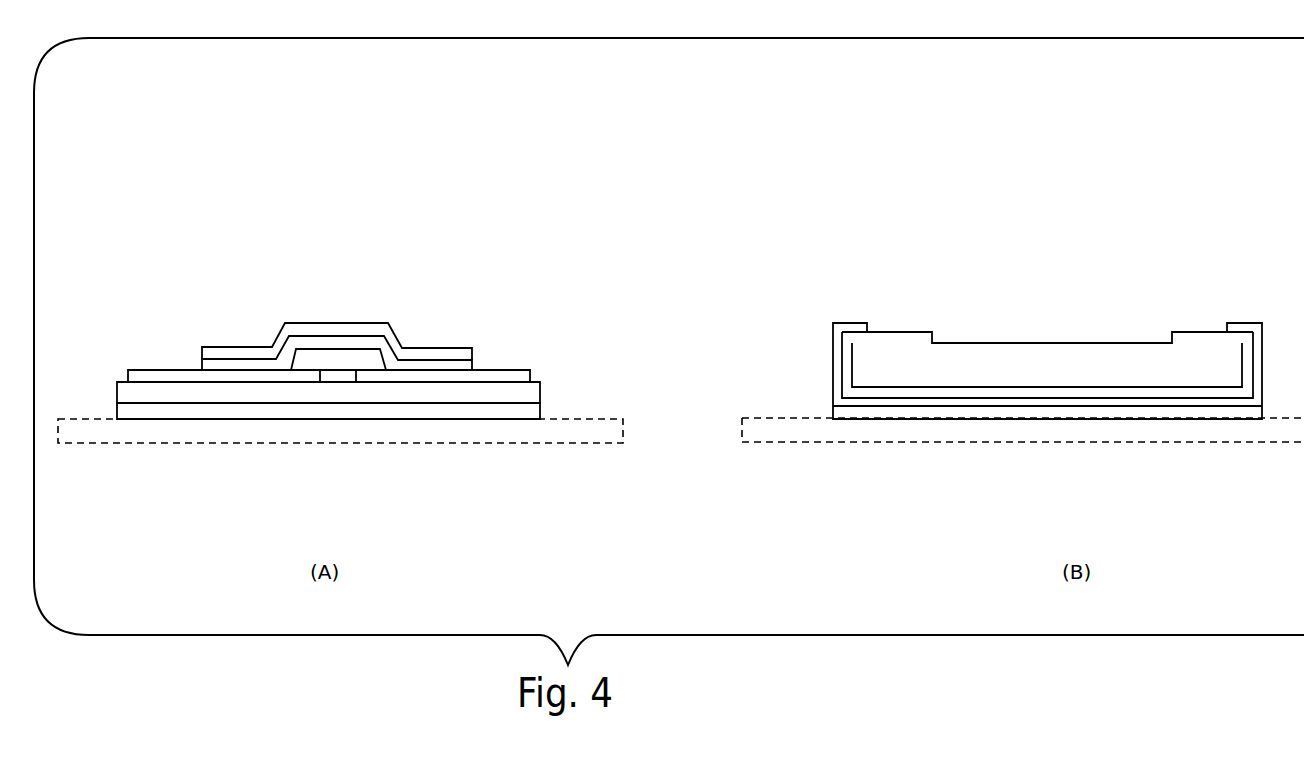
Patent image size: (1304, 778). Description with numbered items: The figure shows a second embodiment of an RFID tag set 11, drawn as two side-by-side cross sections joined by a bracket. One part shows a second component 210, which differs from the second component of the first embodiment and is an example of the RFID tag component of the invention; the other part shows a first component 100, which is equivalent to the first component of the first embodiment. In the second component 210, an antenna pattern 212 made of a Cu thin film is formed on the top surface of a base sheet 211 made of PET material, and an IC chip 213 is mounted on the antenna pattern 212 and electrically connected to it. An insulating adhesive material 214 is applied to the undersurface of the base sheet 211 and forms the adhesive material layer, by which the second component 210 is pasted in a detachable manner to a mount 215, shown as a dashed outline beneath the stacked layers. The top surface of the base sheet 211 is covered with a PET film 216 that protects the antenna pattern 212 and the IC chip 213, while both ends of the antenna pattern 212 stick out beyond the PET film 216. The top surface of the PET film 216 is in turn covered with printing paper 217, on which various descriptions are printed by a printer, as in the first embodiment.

The RFID tag set 11 is at (977, 177).
The second component 210 is at (452, 273).
The first component 100 is at (1005, 283).
The base sheet 211 is at (533, 392).
The antenna pattern 212 is at (507, 373).
The IC chip 213 is at (350, 357).
The insulating adhesive material 214 is at (533, 413).
The mount 215 is at (507, 443).
The PET film 216 is at (208, 362).
The printing paper 217 is at (282, 340).